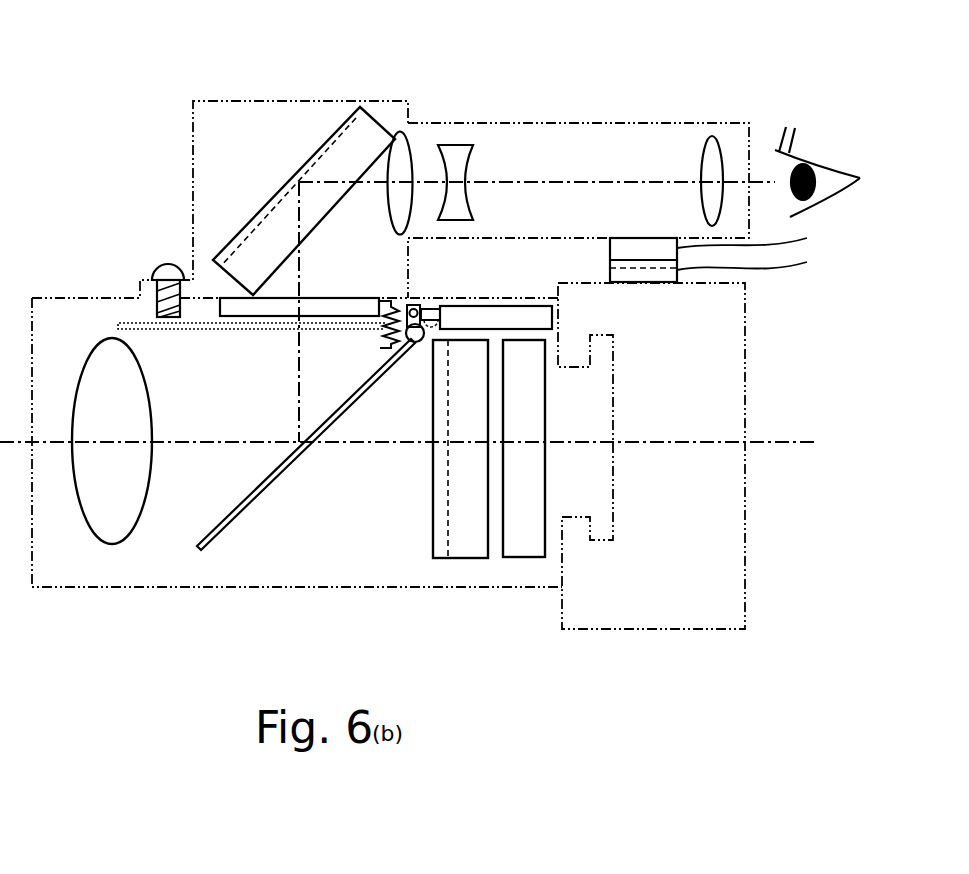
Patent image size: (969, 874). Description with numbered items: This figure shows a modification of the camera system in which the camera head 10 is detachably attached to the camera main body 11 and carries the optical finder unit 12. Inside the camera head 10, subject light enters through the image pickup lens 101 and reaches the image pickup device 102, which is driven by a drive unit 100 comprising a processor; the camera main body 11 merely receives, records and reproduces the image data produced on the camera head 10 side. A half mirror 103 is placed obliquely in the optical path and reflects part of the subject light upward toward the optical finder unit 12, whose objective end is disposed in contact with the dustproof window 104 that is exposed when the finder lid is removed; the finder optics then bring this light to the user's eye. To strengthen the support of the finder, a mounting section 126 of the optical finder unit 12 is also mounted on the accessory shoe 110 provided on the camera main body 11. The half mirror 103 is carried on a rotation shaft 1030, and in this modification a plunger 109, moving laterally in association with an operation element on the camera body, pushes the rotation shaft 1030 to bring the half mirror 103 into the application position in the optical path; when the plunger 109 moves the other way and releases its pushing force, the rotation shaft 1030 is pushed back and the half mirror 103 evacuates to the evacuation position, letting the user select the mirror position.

The camera head 10 is at (333, 588).
The camera main body 11 is at (745, 352).
The optical finder unit 12 is at (590, 122).
The drive unit 100 is at (525, 558).
The image pickup lens 101 is at (133, 498).
The image pickup device 102 is at (456, 558).
The half mirror 103 is at (247, 508).
The dustproof window 104 is at (320, 299).
The plunger 109 is at (437, 305).
The rotation shaft 1030 is at (415, 342).
The accessory shoe 110 is at (731, 260).
The mounting section 126 is at (764, 239).